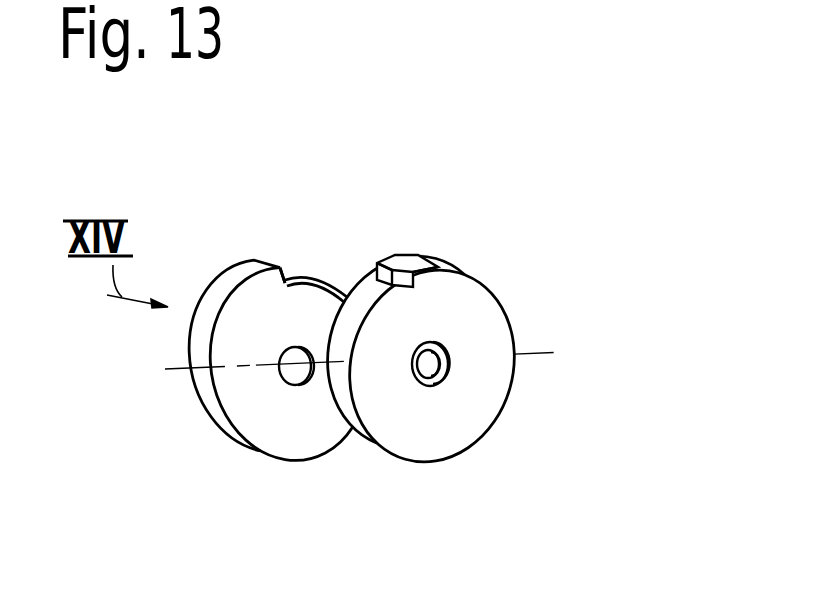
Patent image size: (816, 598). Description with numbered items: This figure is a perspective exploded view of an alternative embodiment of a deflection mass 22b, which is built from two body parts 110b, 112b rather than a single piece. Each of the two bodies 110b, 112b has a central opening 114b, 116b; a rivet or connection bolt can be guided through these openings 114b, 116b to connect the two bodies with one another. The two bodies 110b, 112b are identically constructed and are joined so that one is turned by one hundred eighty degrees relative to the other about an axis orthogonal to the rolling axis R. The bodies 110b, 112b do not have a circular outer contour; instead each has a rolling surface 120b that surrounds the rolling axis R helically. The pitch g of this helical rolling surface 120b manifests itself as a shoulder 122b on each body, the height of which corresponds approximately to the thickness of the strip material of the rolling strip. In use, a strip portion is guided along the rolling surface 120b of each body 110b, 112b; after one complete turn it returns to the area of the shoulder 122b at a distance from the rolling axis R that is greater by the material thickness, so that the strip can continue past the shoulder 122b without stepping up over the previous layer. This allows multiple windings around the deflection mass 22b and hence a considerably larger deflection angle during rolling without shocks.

The deflection mass 22b is at (419, 213).
The body part 110b is at (258, 428).
The body part 112b is at (472, 418).
The central opening 114b is at (283, 370).
The central opening 116b is at (444, 349).
The rolling surface 120b is at (316, 276).
The shoulder 122b is at (287, 281).
The pitch g is at (436, 265).
The rolling axis R is at (528, 360).